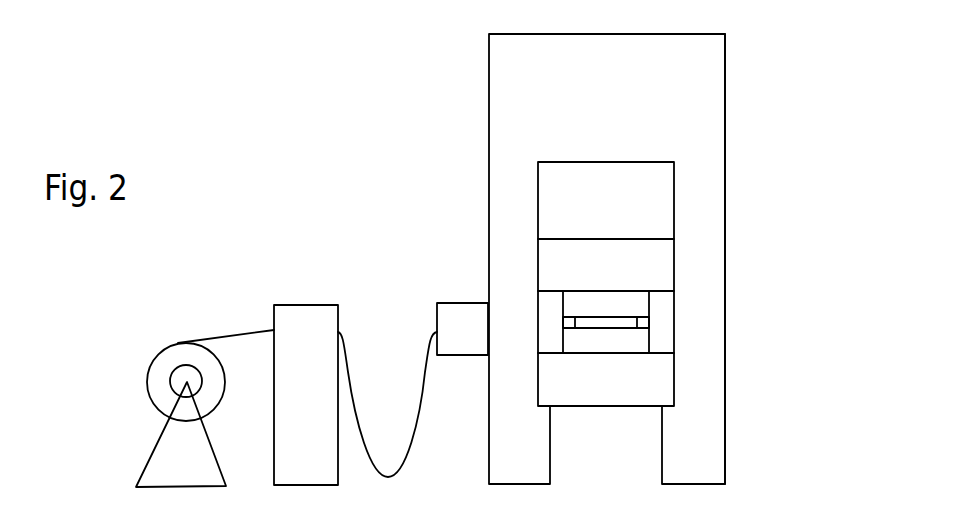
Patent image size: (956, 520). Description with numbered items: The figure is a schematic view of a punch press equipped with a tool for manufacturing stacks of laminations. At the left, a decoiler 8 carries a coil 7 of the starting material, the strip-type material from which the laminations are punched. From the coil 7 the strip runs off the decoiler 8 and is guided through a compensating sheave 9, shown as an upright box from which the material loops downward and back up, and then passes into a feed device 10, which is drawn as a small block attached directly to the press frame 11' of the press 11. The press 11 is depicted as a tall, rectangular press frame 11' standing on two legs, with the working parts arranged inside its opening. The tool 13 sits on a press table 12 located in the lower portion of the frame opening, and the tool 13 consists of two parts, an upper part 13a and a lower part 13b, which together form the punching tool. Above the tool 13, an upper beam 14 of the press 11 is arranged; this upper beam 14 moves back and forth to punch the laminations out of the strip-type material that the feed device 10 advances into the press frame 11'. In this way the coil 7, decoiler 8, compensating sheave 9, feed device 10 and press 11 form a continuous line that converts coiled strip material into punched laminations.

The coil 7 is at (177, 362).
The decoiler 8 is at (163, 472).
The compensating sheave 9 is at (298, 353).
The feed device 10 is at (462, 337).
The press 11 is at (654, 246).
The press frame 11' is at (780, 259).
The press table 12 is at (610, 391).
The tool 13 is at (650, 333).
The upper part 13a is at (601, 314).
The lower part 13b is at (603, 352).
The upper beam 14 is at (617, 279).